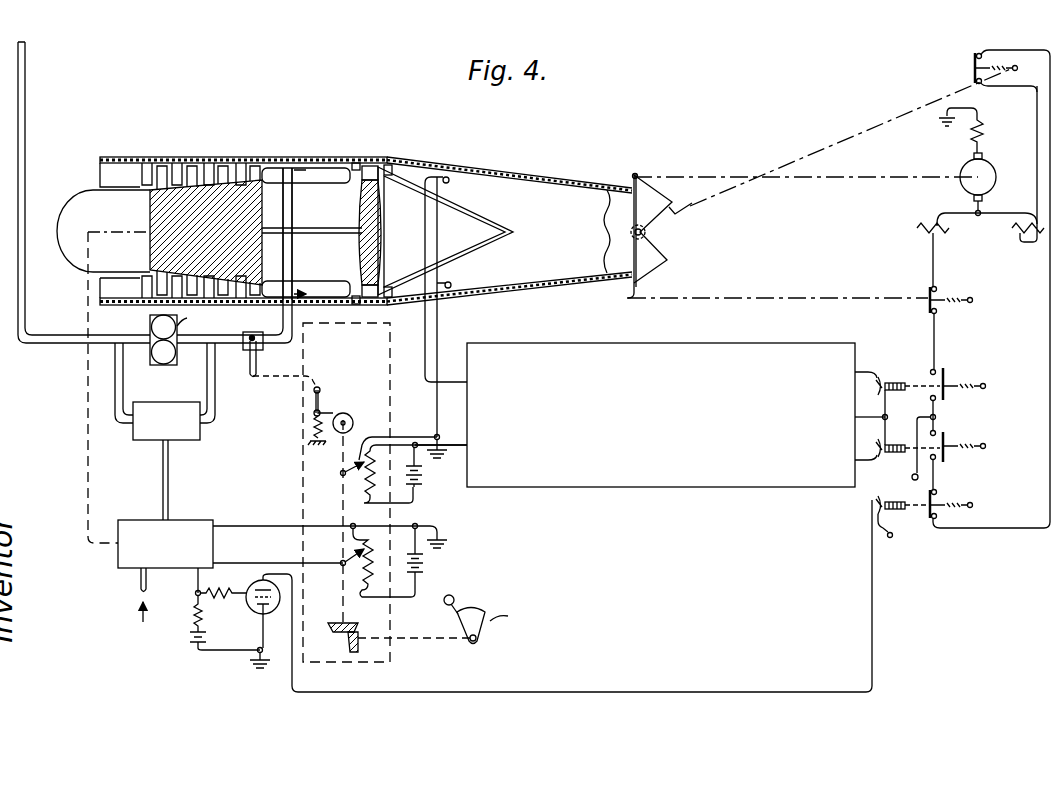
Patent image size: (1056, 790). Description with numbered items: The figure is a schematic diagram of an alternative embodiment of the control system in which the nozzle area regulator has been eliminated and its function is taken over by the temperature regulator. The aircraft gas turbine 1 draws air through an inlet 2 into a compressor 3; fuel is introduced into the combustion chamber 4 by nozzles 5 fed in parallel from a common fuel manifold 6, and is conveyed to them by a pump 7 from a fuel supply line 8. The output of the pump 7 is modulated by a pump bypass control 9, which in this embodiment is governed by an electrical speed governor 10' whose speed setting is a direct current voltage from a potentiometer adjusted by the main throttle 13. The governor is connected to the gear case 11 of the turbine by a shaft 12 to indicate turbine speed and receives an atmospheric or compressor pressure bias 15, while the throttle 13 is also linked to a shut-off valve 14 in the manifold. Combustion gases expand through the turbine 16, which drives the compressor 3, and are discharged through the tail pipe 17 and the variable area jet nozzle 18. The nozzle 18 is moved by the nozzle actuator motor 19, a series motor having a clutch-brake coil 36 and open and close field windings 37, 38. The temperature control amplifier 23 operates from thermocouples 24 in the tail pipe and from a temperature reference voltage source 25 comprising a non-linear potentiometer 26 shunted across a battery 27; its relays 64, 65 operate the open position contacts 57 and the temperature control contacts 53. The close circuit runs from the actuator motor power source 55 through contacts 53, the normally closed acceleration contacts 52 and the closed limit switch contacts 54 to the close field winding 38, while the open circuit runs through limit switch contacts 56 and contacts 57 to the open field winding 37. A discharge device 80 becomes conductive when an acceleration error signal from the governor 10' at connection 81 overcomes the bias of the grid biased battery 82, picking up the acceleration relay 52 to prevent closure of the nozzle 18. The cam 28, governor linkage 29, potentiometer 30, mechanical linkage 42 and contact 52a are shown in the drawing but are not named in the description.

The aircraft gas turbine 1 is at (460, 143).
The inlet 2 is at (100, 171).
The compressor 3 is at (258, 178).
The combustion chamber 4 is at (322, 166).
The nozzles 5 is at (292, 166).
The fuel manifold 6 is at (237, 344).
The pump 7 is at (150, 328).
The fuel supply line 8 is at (62, 343).
The pump bypass control 9 is at (161, 402).
The electrical speed governor 10' is at (165, 504).
The gear case 11 is at (80, 266).
The shaft 12 is at (96, 467).
The main throttle 13 is at (476, 607).
The shut-off valve 14 is at (263, 335).
The pressure bias 15 is at (138, 579).
The turbine 16 is at (385, 165).
The tail pipe 17 is at (550, 178).
The jet nozzle 18 is at (665, 190).
The nozzle actuator motor 19 is at (990, 166).
The temperature control amplifier 23 is at (669, 388).
The thermocouples 24 is at (450, 184).
The temperature reference voltage source 25 is at (362, 503).
The non-linear potentiometer 26 is at (375, 437).
The battery 27 is at (430, 481).
The cam 28 is at (330, 655).
The governor 29 is at (348, 414).
The potentiometer 30 is at (330, 559).
The series clutch-brake coil 36 is at (983, 118).
The open field winding 37 is at (917, 228).
The close field winding 38 is at (1012, 228).
The mechanical linkage 42 is at (881, 177).
The acceleration contacts 52 is at (942, 500).
The switch contact 52a is at (893, 537).
The temperature control contacts 53 is at (950, 454).
The closed limit switch contacts 54 is at (974, 63).
The actuator motor power source 55 is at (911, 477).
The limit switch contacts 56 is at (927, 289).
The open position contacts 57 is at (948, 379).
The relay 64 is at (895, 380).
The relay 65 is at (895, 441).
The discharge device 80 is at (555, 596).
The connection 81 is at (197, 586).
The grid biased battery 82 is at (208, 640).